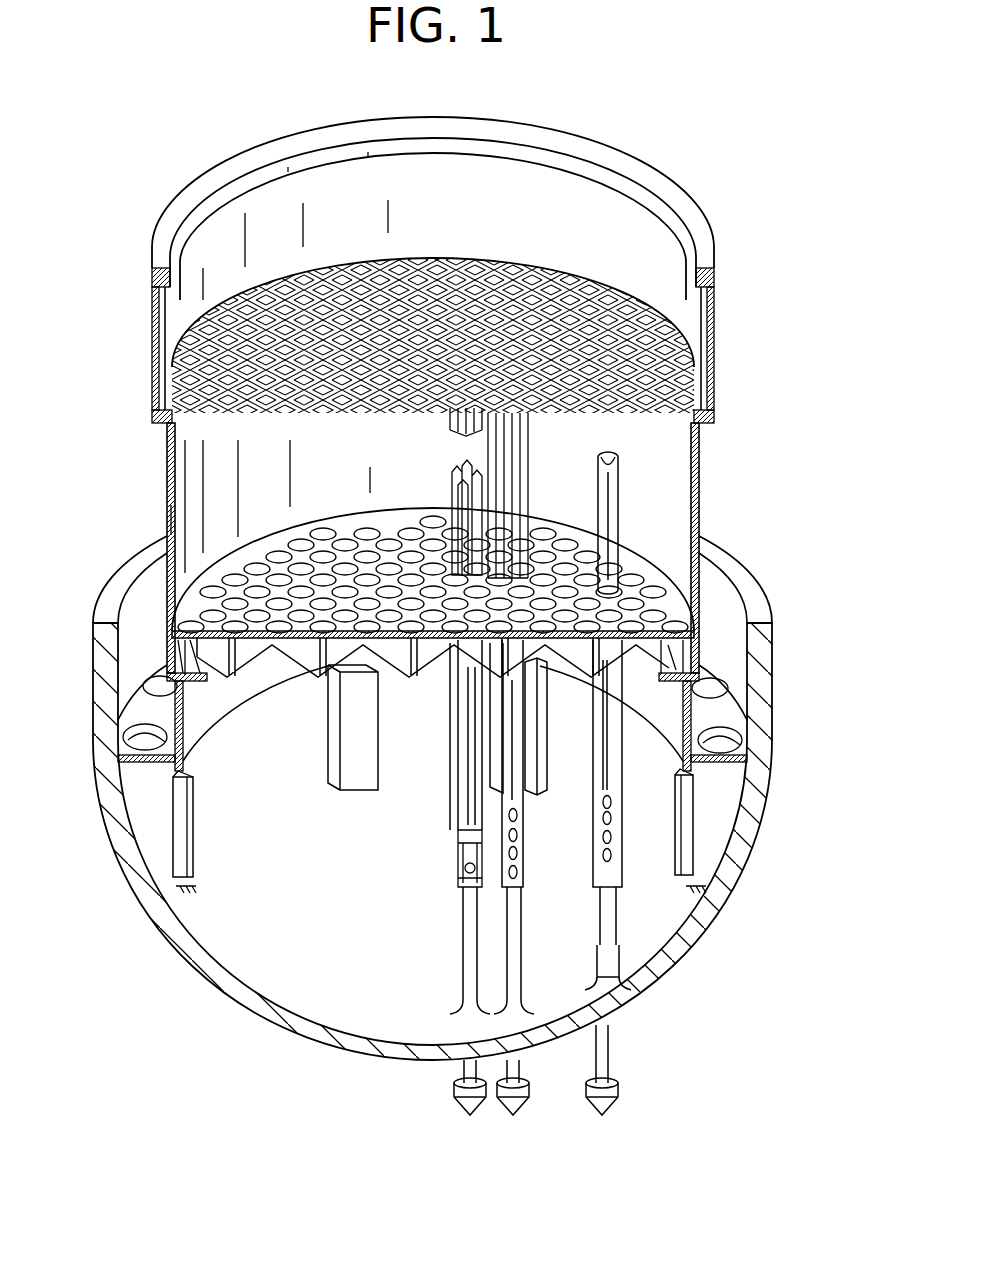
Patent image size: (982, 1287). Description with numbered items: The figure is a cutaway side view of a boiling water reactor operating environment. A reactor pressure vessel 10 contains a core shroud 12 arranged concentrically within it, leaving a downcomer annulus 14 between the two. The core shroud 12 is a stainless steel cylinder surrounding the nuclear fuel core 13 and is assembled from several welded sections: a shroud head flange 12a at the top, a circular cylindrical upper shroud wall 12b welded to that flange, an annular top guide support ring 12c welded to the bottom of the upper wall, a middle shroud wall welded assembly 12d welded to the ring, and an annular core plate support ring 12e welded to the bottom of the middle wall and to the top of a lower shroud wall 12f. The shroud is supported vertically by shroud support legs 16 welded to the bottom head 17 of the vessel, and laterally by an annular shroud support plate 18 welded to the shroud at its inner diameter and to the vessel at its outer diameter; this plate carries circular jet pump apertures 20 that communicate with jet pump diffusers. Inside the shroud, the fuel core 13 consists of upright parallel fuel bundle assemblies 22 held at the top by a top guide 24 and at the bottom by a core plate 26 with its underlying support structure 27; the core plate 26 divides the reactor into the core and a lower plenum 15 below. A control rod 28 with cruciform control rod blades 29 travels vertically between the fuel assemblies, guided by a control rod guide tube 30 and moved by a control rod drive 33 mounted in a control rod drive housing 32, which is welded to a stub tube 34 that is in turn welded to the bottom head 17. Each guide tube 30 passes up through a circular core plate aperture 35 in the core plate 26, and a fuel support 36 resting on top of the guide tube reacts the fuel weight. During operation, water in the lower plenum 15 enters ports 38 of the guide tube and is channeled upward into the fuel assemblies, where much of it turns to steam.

The reactor pressure vessel 10 is at (248, 1000).
The core shroud 12 is at (167, 470).
The shroud head flange 12a is at (158, 243).
The upper shroud wall 12b is at (152, 330).
The top guide support ring 12c is at (152, 418).
The middle shroud wall welded assembly 12d is at (170, 520).
The core plate support ring 12e is at (205, 690).
The lower shroud wall 12f is at (188, 745).
The nuclear fuel core 13 is at (660, 442).
The downcomer annulus 14 is at (162, 633).
The lower plenum 15 is at (700, 810).
The shroud support legs 16 is at (192, 828).
The bottom head 17 is at (180, 893).
The shroud support plate 18 is at (735, 700).
The jet pump apertures 20 is at (152, 755).
The fuel bundle assemblies 22 is at (526, 440).
The top guide 24 is at (300, 413).
The core plate 26 is at (318, 528).
The support structure 27 is at (440, 672).
The control rod 28 is at (618, 505).
The control rod blades 29 is at (612, 460).
The control rod guide tube 30 is at (462, 745).
The control rod drive housing 32 is at (464, 928).
The control rod drive 33 is at (610, 1043).
The stub tube 34 is at (464, 990).
The core plate apertures 35 is at (700, 575).
The fuel support 36 is at (665, 540).
The ports 38 is at (518, 876).